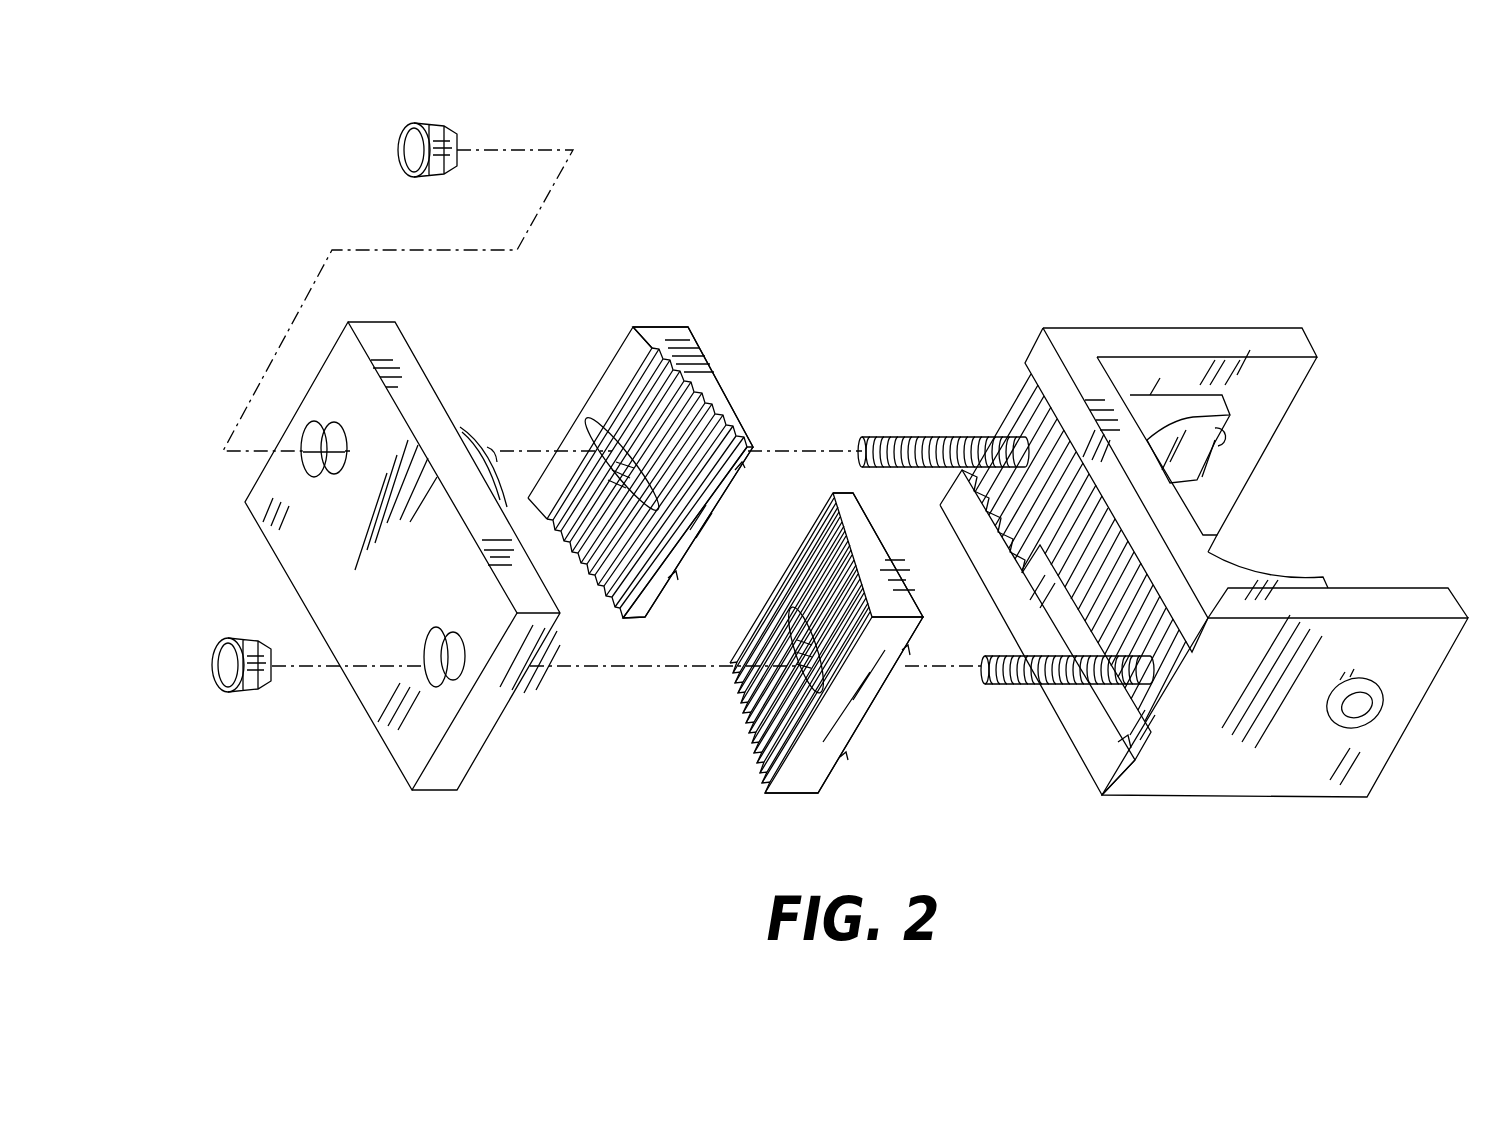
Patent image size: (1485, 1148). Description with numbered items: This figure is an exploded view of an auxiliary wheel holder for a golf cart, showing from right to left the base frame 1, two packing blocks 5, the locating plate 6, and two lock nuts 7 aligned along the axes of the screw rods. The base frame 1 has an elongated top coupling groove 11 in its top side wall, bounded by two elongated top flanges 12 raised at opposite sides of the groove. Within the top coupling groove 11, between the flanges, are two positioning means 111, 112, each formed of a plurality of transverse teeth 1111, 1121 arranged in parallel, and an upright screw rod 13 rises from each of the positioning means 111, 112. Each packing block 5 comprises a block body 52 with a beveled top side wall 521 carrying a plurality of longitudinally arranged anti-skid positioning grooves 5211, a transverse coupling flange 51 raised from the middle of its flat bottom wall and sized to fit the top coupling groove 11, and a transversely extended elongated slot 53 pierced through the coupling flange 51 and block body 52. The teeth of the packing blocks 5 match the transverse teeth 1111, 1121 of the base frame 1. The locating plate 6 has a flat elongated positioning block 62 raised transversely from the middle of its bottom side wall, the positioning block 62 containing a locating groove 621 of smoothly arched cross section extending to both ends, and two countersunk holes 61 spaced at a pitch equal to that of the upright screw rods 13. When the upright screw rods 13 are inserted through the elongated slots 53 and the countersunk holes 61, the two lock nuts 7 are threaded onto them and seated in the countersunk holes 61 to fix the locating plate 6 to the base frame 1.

The base frame 1 is at (1164, 520).
The elongated top coupling groove 11 is at (1046, 567).
The positioning means 111 is at (1060, 578).
The transverse teeth 1111 is at (1040, 557).
The positioning means 112 is at (1077, 612).
The transverse teeth 1121 is at (1115, 745).
The elongated top flange 12 is at (1040, 355).
The upright screw rod 13 is at (920, 435).
The packing block 5 is at (725, 536).
The transverse coupling flange 51 is at (723, 507).
The block body 52 is at (737, 405).
The beveled top side wall 521 is at (690, 362).
The anti-skid positioning grooves 5211 is at (668, 339).
The elongated slot 53 is at (598, 425).
The locating plate 6 is at (385, 538).
The countersunk hole 61 is at (318, 438).
The positioning block 62 is at (463, 430).
The locating groove 621 is at (495, 455).
The lock nut 7 is at (430, 172).